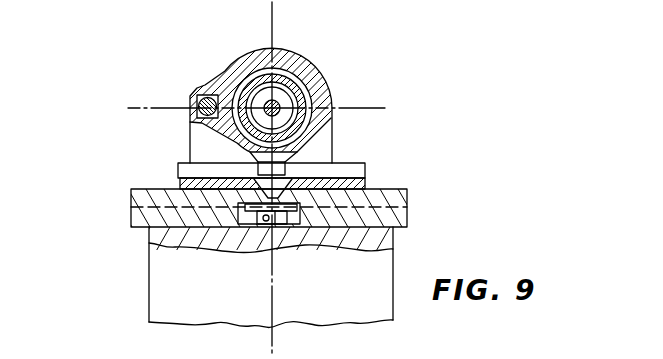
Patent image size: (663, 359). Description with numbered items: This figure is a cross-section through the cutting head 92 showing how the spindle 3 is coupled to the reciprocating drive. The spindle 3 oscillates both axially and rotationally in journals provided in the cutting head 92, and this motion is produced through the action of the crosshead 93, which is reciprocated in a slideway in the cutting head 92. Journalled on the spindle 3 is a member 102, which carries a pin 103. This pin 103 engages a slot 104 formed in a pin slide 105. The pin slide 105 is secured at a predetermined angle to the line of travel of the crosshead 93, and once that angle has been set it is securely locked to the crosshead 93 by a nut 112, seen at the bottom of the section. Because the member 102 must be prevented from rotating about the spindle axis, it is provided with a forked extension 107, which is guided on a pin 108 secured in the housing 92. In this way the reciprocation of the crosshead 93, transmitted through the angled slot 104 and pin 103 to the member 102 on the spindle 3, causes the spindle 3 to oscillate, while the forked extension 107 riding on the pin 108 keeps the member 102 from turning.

The spindle 3 is at (298, 97).
The cutting head 92 is at (325, 127).
The crosshead 93 is at (407, 216).
The member 102 is at (302, 68).
The pin 103 is at (282, 165).
The slot 104 is at (357, 172).
The pin slide 105 is at (176, 182).
The forked extension 107 is at (207, 92).
The pin 108 is at (200, 112).
The nut 112 is at (258, 228).